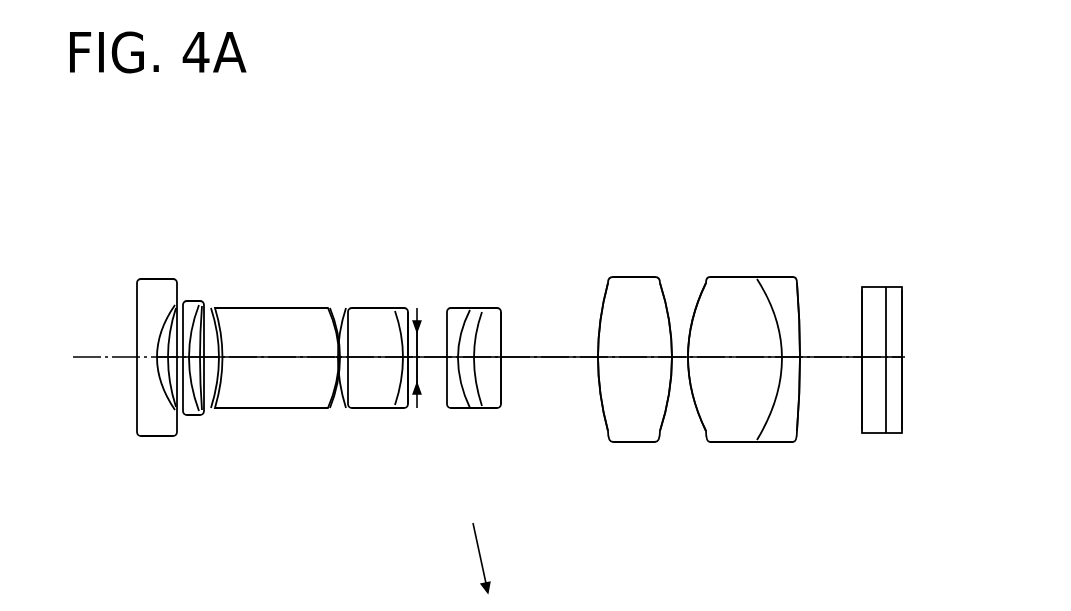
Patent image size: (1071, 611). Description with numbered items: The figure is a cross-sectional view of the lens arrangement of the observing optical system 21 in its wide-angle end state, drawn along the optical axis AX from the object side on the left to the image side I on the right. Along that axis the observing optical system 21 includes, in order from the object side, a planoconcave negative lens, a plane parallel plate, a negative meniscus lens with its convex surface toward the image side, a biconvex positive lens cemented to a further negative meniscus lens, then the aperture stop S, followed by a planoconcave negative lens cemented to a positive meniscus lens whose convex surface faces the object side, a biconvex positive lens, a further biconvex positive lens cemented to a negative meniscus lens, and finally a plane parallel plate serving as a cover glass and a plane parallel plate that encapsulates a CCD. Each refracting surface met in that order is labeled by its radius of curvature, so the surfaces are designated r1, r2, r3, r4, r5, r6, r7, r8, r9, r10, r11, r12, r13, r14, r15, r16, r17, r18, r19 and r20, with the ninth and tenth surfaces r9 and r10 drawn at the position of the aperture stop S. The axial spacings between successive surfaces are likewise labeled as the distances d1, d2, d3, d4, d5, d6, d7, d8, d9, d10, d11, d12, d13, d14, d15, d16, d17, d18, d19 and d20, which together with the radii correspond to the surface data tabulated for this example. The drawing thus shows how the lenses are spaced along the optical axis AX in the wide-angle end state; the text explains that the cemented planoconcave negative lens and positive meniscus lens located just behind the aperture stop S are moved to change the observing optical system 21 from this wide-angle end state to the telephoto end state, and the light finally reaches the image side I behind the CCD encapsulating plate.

The optical axis AX is at (92, 355).
The observing optical system 21 is at (602, 186).
The aperture stop S is at (428, 320).
The image plane I is at (905, 330).
The radius of curvature of lens surface r1 is at (135, 307).
The radius of curvature of lens surface r2 is at (172, 308).
The radius of curvature of lens surface r3 is at (186, 308).
The radius of curvature of lens surface r4 is at (208, 318).
The radius of curvature of lens surface r5 is at (218, 333).
The radius of curvature of lens surface r6 is at (337, 310).
The radius of curvature of lens surface r7 is at (345, 310).
The radius of curvature of lens surface r8 is at (375, 310).
The radius of curvature of lens surface r9 is at (417, 308).
The radius of curvature of lens surface r10 is at (448, 296).
The radius of curvature of lens surface r11 is at (440, 323).
The radius of curvature of lens surface r12 is at (467, 320).
The radius of curvature of lens surface r13 is at (503, 323).
The radius of curvature of lens surface r14 is at (598, 295).
The radius of curvature of lens surface r15 is at (667, 295).
The radius of curvature of lens surface r16 is at (688, 295).
The radius of curvature of lens surface r17 is at (762, 300).
The radius of curvature of lens surface r18 is at (806, 295).
The radius of curvature of lens surface r19 is at (860, 300).
The radius of curvature of lens surface r20 is at (890, 300).
The distance between lens surfaces d1 is at (148, 363).
The distance between lens surfaces d2 is at (170, 370).
The distance between lens surfaces d3 is at (190, 365).
The distance between lens surfaces d4 is at (214, 365).
The distance between lens surfaces d5 is at (273, 365).
The distance between lens surfaces d6 is at (340, 365).
The distance between lens surfaces d7 is at (372, 363).
The distance between lens surfaces d8 is at (405, 365).
The distance between lens surfaces d9 is at (417, 392).
The distance between lens surfaces d10 is at (432, 365).
The distance between lens surfaces d11 is at (475, 365).
The distance between lens surfaces d12 is at (490, 365).
The distance between lens surfaces d13 is at (547, 363).
The distance between lens surfaces d14 is at (635, 363).
The distance between lens surfaces d15 is at (680, 365).
The distance between lens surfaces d16 is at (728, 363).
The distance between lens surfaces d17 is at (790, 363).
The distance between lens surfaces d18 is at (827, 363).
The distance between lens surfaces d19 is at (872, 363).
The distance between lens surfaces d20 is at (893, 365).